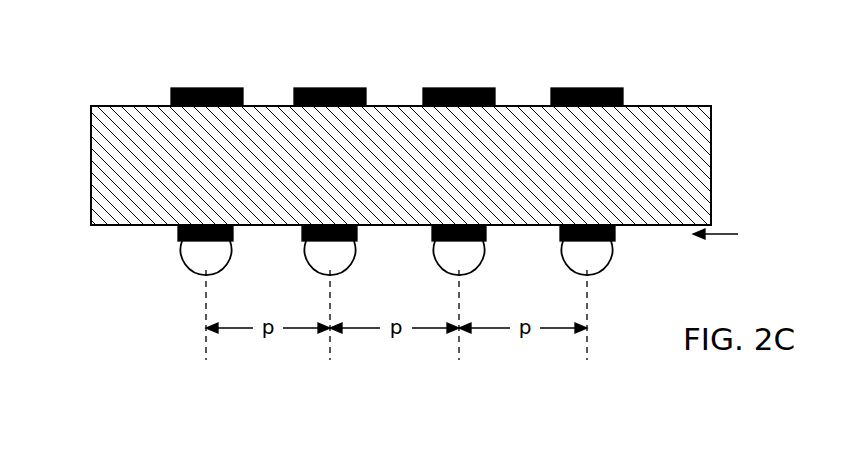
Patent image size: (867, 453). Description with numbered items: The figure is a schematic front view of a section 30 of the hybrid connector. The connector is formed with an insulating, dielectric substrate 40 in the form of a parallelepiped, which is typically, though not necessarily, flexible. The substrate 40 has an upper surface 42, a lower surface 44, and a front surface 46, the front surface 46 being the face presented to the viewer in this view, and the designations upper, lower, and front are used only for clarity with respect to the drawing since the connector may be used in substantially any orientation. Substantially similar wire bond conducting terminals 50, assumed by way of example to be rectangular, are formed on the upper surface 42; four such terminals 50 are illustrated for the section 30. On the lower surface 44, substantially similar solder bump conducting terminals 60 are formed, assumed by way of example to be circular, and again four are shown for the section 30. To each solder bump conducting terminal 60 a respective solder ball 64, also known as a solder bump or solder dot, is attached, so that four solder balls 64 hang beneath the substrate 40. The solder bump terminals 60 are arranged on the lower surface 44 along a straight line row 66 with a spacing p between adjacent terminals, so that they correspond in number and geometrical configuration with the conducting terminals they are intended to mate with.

The section 30 is at (108, 106).
The substrate 40 is at (711, 155).
The upper surface 42 is at (145, 106).
The lower surface 44 is at (103, 225).
The front surface 46 is at (117, 171).
The wire bond conducting terminals 50 is at (587, 88).
The solder bump conducting terminals 60 is at (233, 240).
The solder ball 64 is at (201, 272).
The row 66 is at (729, 234).